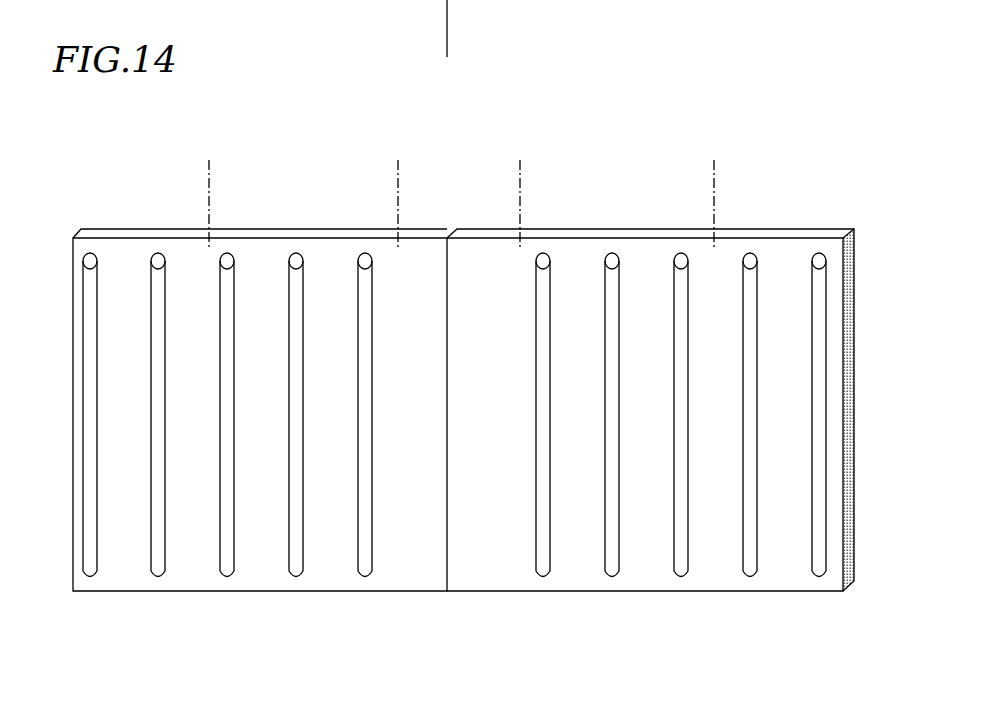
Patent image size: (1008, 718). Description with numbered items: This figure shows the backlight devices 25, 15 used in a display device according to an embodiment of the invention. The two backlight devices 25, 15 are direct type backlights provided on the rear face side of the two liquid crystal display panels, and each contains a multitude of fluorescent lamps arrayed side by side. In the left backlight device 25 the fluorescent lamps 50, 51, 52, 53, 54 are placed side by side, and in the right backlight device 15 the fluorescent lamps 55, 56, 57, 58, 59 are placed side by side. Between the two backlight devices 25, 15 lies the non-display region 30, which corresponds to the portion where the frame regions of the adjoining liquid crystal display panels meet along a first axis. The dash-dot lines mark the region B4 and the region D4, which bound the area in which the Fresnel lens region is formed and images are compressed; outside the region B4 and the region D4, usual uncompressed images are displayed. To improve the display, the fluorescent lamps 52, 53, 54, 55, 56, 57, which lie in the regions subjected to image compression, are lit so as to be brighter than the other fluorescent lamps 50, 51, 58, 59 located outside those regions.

The backlight device 15 is at (812, 243).
The backlight device 25 is at (102, 247).
The non-display region 30 is at (399, 189).
The region B4 is at (209, 157).
The region D4 is at (714, 157).
The fluorescent lamp 50 is at (90, 579).
The fluorescent lamp 51 is at (158, 579).
The fluorescent lamp 52 is at (227, 579).
The fluorescent lamp 53 is at (296, 579).
The fluorescent lamp 54 is at (365, 579).
The fluorescent lamp 55 is at (543, 579).
The fluorescent lamp 56 is at (612, 579).
The fluorescent lamp 57 is at (681, 579).
The fluorescent lamp 58 is at (750, 579).
The fluorescent lamp 59 is at (819, 579).